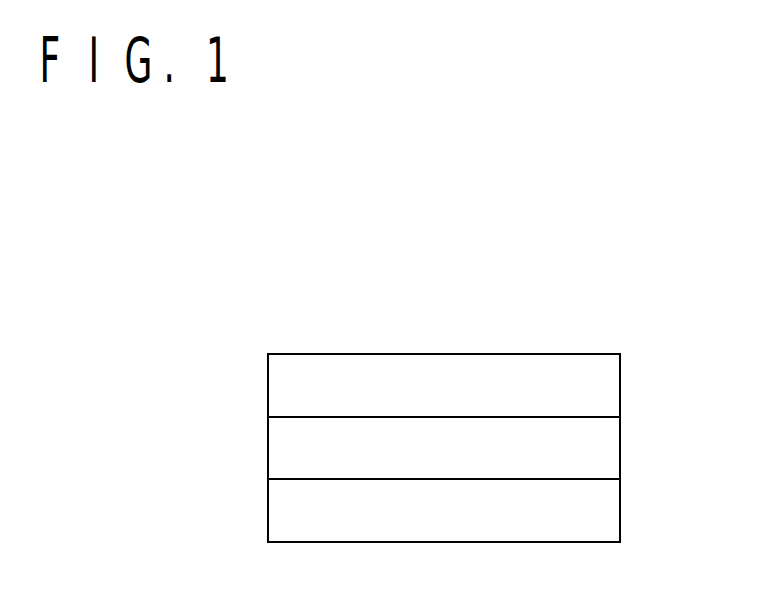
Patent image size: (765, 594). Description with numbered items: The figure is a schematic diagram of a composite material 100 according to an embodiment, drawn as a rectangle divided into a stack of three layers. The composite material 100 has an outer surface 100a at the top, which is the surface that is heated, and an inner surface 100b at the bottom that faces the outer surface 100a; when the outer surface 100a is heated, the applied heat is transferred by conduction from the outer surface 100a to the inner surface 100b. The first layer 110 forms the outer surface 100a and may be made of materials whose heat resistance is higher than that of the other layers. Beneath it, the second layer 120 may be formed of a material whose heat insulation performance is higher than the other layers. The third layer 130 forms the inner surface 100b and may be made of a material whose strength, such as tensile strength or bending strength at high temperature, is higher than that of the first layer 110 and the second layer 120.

The composite material 100 is at (593, 302).
The outer surface 100a is at (281, 353).
The inner surface 100b is at (281, 543).
The first layer 110 is at (612, 388).
The second layer 120 is at (612, 449).
The third layer 130 is at (612, 513).